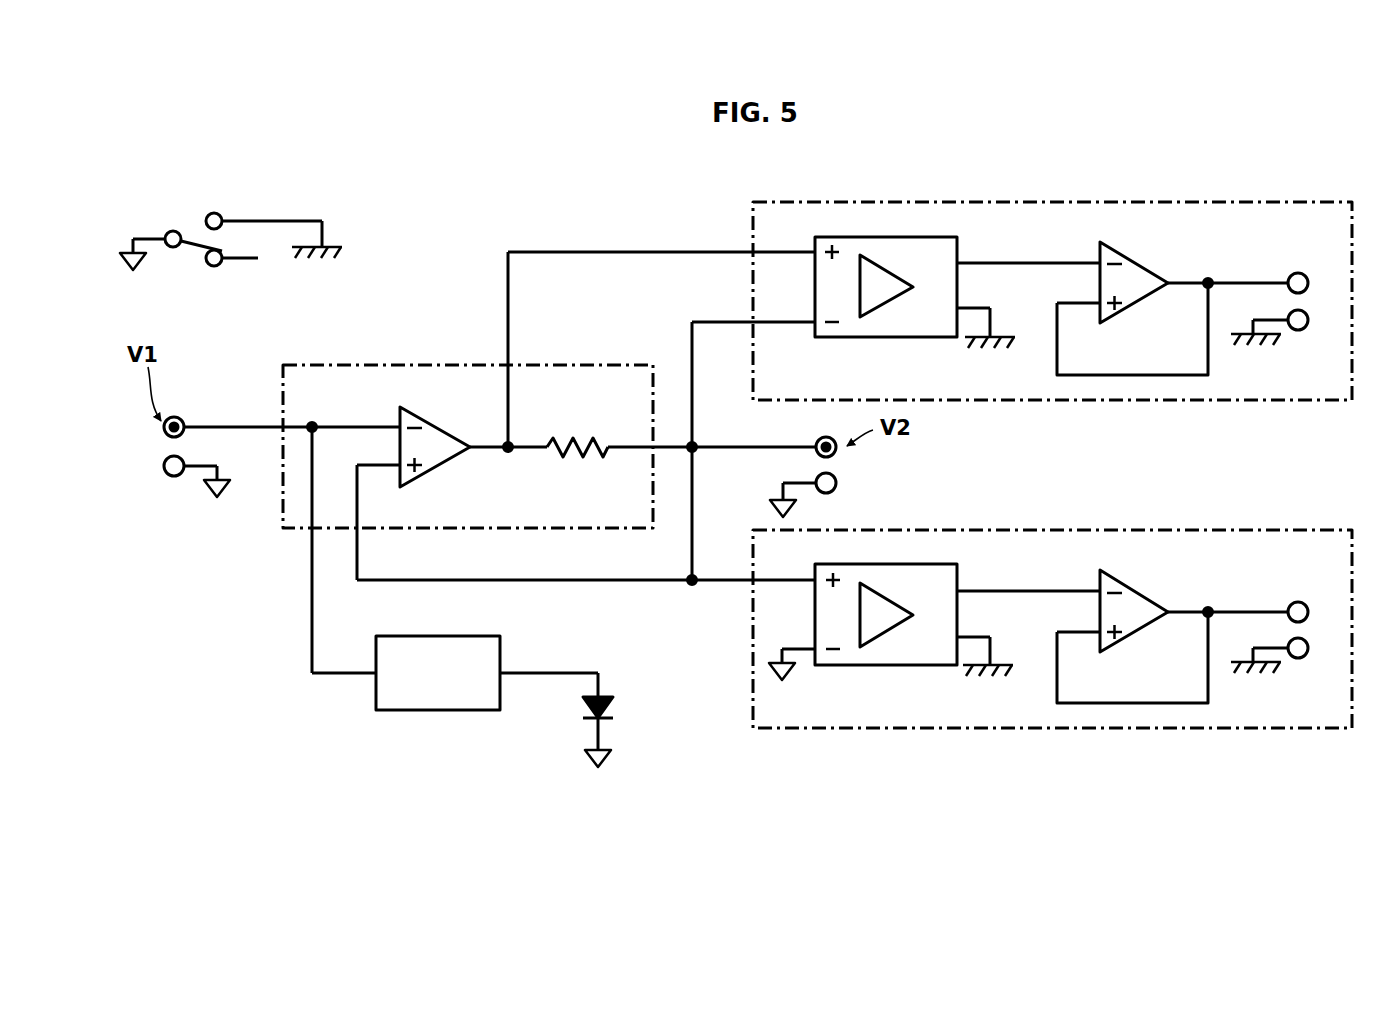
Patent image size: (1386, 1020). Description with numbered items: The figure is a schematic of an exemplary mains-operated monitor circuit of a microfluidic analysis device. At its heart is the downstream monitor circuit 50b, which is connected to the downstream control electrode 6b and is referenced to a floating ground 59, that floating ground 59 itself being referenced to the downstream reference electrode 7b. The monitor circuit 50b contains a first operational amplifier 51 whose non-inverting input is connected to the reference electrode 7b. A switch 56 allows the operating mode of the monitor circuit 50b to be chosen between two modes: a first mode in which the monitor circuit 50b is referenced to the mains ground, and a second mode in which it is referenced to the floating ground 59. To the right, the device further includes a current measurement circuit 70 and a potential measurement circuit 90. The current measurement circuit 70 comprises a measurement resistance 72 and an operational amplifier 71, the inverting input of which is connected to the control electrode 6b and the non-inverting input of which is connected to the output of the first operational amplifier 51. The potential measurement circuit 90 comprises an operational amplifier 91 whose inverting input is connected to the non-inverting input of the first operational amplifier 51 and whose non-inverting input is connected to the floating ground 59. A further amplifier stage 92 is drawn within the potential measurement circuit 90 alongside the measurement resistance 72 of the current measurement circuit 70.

The switch 56 is at (189, 216).
The downstream reference electrode 7b is at (219, 437).
The floating ground 59 is at (175, 476).
The downstream monitor circuit 50b is at (468, 418).
The first operational amplifier 51 is at (439, 473).
The downstream control electrode 6b is at (848, 458).
The current measurement circuit 70 is at (1052, 272).
The operational amplifier 71 is at (1142, 257).
The measurement resistance 72 is at (884, 344).
The potential measurement circuit 90 is at (1052, 601).
The operational amplifier 91 is at (1142, 586).
The isolation amplifier 92 is at (884, 672).